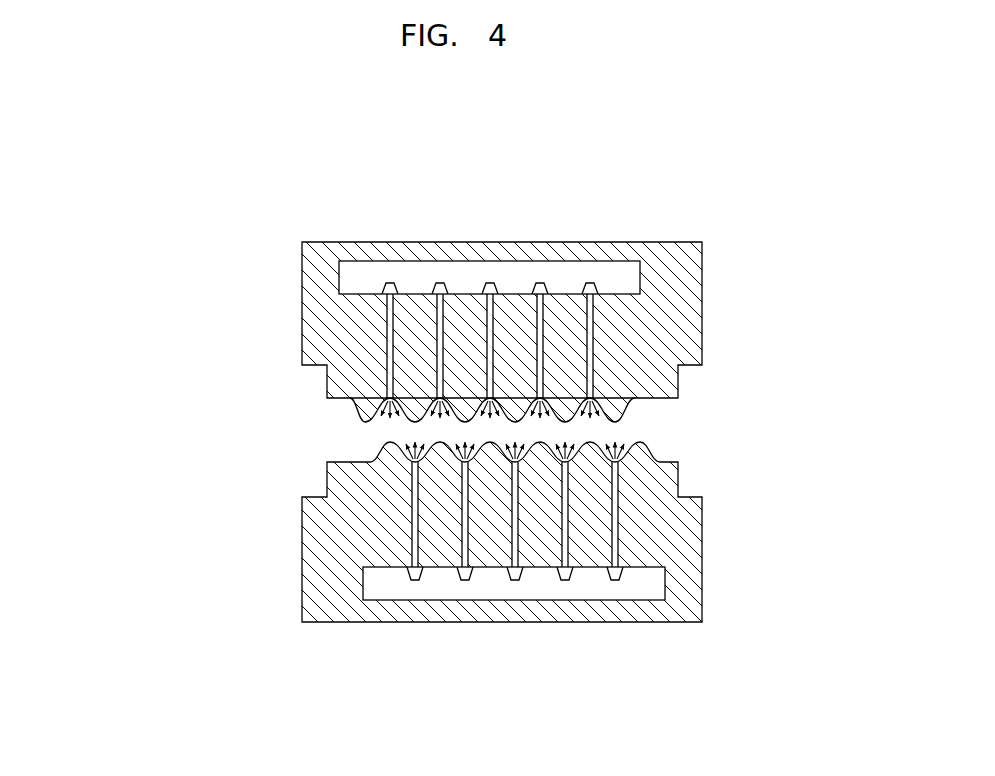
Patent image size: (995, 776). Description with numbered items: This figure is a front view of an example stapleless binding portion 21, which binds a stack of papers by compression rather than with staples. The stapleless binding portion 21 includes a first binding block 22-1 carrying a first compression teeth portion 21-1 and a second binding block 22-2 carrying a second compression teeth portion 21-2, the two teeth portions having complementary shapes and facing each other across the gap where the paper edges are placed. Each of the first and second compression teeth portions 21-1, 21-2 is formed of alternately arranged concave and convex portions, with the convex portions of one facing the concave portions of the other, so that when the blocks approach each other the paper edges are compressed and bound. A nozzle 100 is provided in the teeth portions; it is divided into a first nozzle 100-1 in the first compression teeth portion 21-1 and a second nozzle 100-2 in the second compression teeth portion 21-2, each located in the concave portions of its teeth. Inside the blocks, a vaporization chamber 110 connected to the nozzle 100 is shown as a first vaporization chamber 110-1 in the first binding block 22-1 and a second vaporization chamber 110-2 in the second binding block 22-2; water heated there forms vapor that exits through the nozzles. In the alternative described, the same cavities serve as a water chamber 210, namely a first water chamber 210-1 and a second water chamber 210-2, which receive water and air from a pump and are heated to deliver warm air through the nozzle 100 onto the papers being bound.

The stapleless binding portion 21 is at (748, 206).
The second binding block 22-2 is at (719, 311).
The first binding block 22-1 is at (718, 547).
The second compression teeth portion 21-2 is at (625, 414).
The first compression teeth portion 21-1 is at (650, 447).
The vaporization chamber 110 is at (117, 477).
The water chamber 210 is at (360, 430).
The second vaporization chamber 110-2 is at (349, 278).
The second water chamber 210-2 is at (381, 344).
The first vaporization chamber 110-1 is at (370, 585).
The first water chamber 210-1 is at (394, 531).
The nozzle 100 is at (258, 410).
The second nozzle 100-2 is at (385, 380).
The first nozzle 100-1 is at (407, 487).